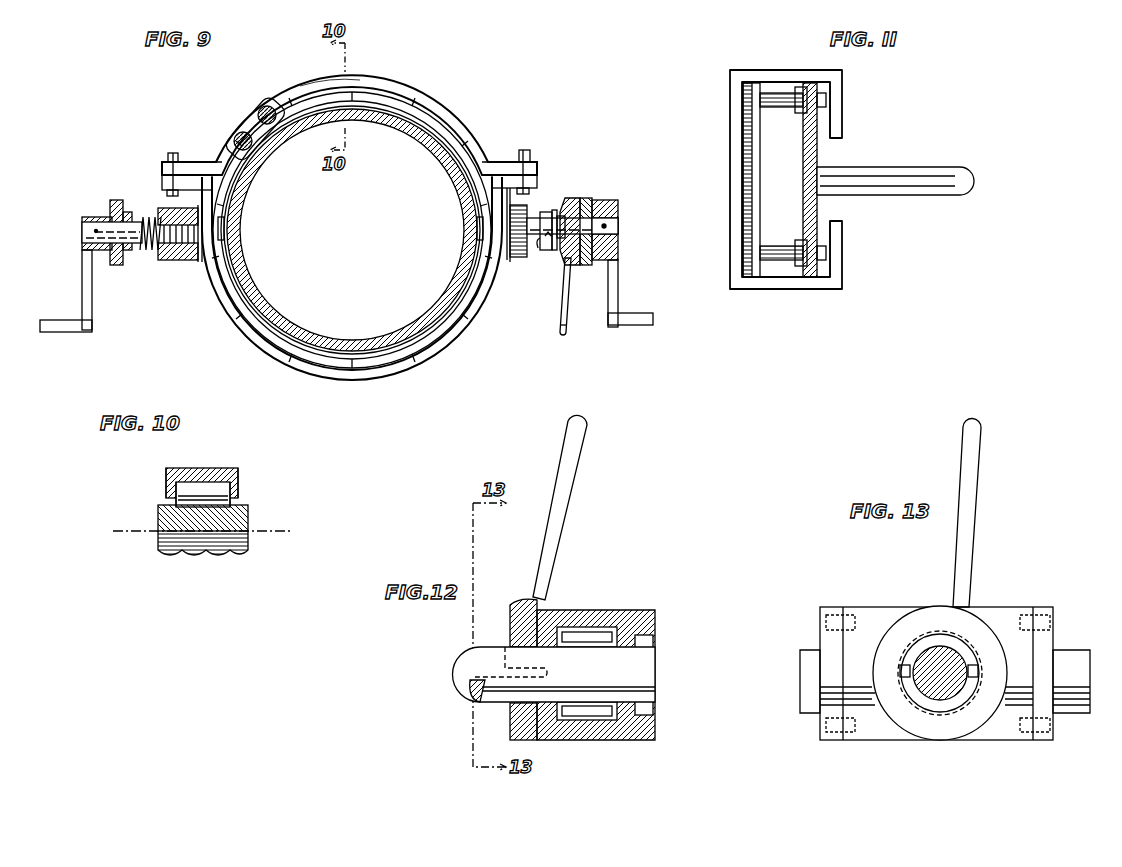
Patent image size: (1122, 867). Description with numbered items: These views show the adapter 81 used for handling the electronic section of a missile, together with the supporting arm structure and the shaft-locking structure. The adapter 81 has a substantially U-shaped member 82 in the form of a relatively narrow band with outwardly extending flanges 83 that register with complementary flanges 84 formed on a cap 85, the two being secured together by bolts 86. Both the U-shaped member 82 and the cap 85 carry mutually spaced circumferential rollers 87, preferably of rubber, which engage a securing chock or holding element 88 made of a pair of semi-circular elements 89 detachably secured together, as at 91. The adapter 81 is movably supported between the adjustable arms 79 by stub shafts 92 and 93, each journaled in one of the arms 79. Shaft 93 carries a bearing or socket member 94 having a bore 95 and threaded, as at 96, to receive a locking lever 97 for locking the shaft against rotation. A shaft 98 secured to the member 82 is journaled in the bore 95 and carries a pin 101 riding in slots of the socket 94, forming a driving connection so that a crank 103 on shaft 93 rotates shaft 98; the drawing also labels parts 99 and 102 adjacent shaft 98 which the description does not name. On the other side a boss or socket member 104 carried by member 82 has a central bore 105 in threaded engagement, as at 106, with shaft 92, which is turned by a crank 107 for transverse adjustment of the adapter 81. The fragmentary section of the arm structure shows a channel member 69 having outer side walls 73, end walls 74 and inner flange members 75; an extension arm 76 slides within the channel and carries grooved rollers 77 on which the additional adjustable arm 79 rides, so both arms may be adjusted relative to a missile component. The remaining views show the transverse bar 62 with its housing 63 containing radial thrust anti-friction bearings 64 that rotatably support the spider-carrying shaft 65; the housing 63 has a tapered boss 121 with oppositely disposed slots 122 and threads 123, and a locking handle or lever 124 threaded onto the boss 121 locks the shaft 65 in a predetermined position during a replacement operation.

In FIG. 13, the transverse bar 62 is at (806, 655).
In FIG. 12, the housing 63 is at (640, 610).
In FIG. 13, the housing 63 is at (1012, 607).
In FIG. 12, the radial thrust anti-friction bearing 64 is at (585, 630).
In FIG. 12, the shaft 65 is at (484, 647).
In FIG. 13, the shaft 65 is at (950, 650).
In FIG. 11, the channel member 69 is at (730, 152).
In FIG. 11, the outer side wall 73 is at (730, 170).
In FIG. 11, the end wall 74 is at (763, 70).
In FIG. 11, the inner flange member 75 is at (840, 110).
In FIG. 11, the extension arm 76 is at (758, 196).
In FIG. 11, the grooved roller 77 is at (822, 97).
In FIG. 9, the adjustable arm 79 is at (114, 200).
In FIG. 11, the adjustable arm 79 is at (818, 157).
In FIG. 9, the adapter 81 is at (411, 75).
In FIG. 9, the U-shaped member 82 is at (384, 378).
In FIG. 9, the flange 83 is at (165, 188).
In FIG. 10, the flange 83 is at (176, 505).
In FIG. 9, the complementary flange 84 is at (165, 161).
In FIG. 10, the complementary flange 84 is at (166, 482).
In FIG. 9, the cap 85 is at (312, 78).
In FIG. 10, the cap 85 is at (205, 468).
In FIG. 9, the bolt 86 is at (173, 152).
In FIG. 9, the circumferential roller 87 is at (240, 137).
In FIG. 10, the circumferential roller 87 is at (185, 507).
In FIG. 9, the holding element 88 is at (442, 134).
In FIG. 10, the holding element 88 is at (248, 516).
In FIG. 9, the semi-circular element 89 is at (392, 112).
In FIG. 10, the semi-circular element 89 is at (248, 546).
In FIG. 9, the securing point 91 is at (226, 232).
In FIG. 9, the stub shaft 92 is at (82, 236).
In FIG. 9, the stub shaft 93 is at (627, 224).
In FIG. 9, the socket member 94 is at (577, 200).
In FIG. 9, the bore 95 is at (538, 247).
In FIG. 9, the threads 96 is at (566, 265).
In FIG. 9, the locking lever 97 is at (560, 330).
In FIG. 9, the shaft 98 is at (543, 212).
In FIG. 9, the ratchet wheel 99 is at (510, 258).
In FIG. 9, the pin 101 is at (566, 205).
In FIG. 9, the collar 102 is at (546, 250).
In FIG. 9, the crank 103 is at (618, 285).
In FIG. 9, the boss 104 is at (200, 262).
In FIG. 9, the bore 105 is at (182, 252).
In FIG. 9, the threads 106 is at (146, 252).
In FIG. 9, the crank 107 is at (92, 325).
In FIG. 12, the tapered boss 121 is at (508, 645).
In FIG. 12, the slot 122 is at (476, 677).
In FIG. 13, the slot 122 is at (900, 670).
In FIG. 12, the threads 123 is at (510, 720).
In FIG. 13, the threads 123 is at (918, 634).
In FIG. 12, the locking lever 124 is at (566, 535).
In FIG. 13, the locking lever 124 is at (975, 530).